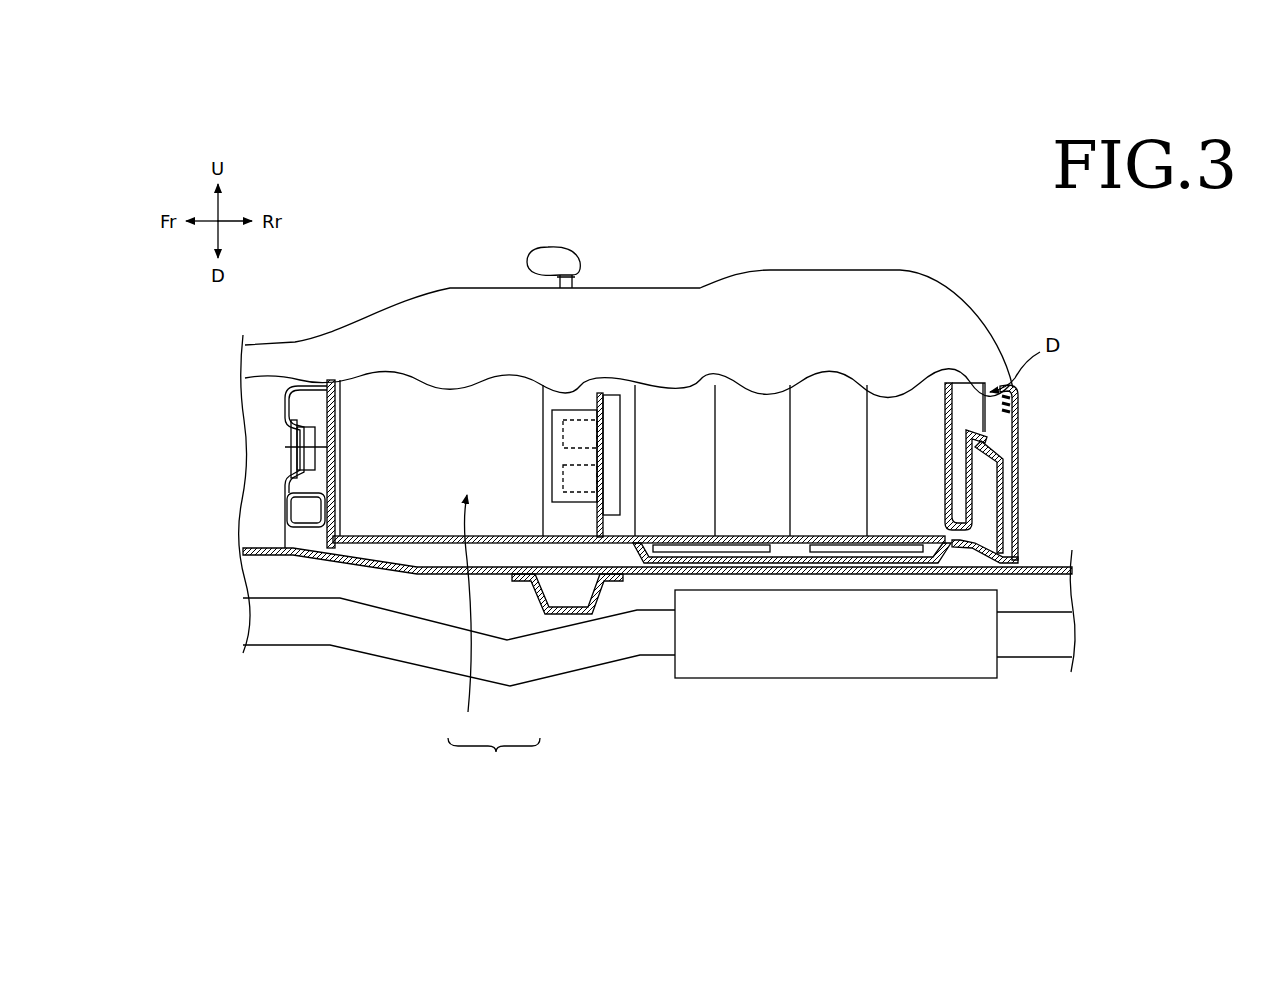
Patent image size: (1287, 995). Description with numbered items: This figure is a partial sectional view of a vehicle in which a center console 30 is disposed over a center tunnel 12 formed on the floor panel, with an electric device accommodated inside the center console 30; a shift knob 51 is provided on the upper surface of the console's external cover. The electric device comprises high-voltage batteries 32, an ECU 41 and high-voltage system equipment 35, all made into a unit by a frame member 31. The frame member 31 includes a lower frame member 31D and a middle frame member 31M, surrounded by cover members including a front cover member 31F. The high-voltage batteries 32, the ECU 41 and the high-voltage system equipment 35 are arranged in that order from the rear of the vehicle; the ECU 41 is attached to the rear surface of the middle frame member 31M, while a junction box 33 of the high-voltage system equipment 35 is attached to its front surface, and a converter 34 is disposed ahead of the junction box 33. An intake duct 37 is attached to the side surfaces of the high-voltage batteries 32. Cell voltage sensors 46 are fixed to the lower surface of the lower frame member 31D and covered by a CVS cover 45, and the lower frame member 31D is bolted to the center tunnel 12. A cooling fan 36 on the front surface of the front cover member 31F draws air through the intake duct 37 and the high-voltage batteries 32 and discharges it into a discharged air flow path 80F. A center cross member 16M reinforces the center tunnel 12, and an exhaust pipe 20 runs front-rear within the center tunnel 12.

The center tunnel 12 is at (1043, 588).
The center cross member 16M is at (595, 588).
The exhaust pipe 20 is at (338, 620).
The center console 30 is at (885, 248).
The frame member 31 is at (1000, 453).
The lower frame member 31D is at (407, 548).
The front cover member 31F is at (338, 418).
The middle frame member 31M is at (597, 420).
The high-voltage batteries 32 is at (830, 425).
The junction box 33 is at (560, 495).
The converter (PCU) 34 is at (467, 617).
The high-voltage system equipment 35 is at (494, 756).
The cooling fan 36 is at (305, 400).
The intake duct 37 is at (967, 400).
The ECU 41 is at (617, 422).
The CVS cover 45 is at (943, 560).
The cell voltage sensors (CVS) 46 is at (842, 545).
The shift knob 51 is at (550, 247).
The discharged air flow path 80F is at (276, 525).